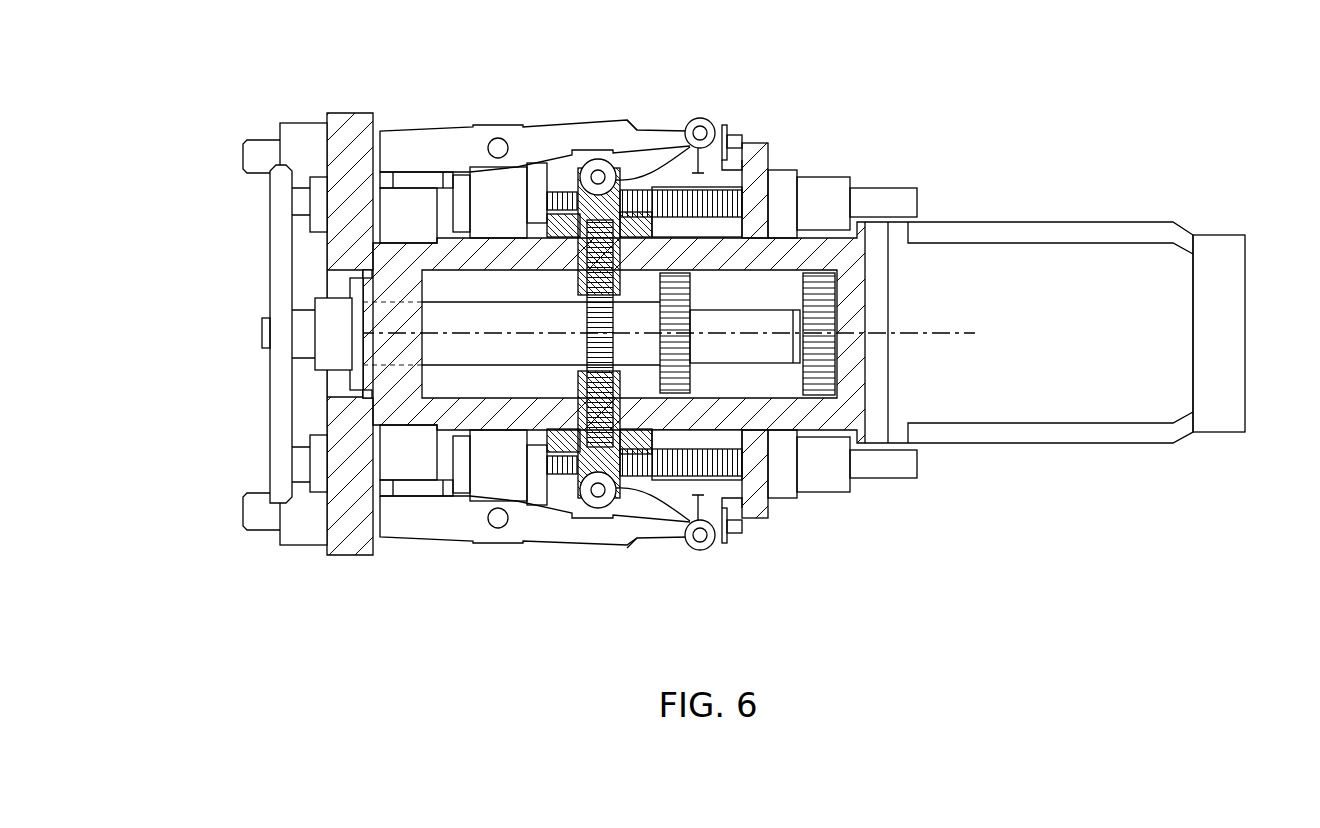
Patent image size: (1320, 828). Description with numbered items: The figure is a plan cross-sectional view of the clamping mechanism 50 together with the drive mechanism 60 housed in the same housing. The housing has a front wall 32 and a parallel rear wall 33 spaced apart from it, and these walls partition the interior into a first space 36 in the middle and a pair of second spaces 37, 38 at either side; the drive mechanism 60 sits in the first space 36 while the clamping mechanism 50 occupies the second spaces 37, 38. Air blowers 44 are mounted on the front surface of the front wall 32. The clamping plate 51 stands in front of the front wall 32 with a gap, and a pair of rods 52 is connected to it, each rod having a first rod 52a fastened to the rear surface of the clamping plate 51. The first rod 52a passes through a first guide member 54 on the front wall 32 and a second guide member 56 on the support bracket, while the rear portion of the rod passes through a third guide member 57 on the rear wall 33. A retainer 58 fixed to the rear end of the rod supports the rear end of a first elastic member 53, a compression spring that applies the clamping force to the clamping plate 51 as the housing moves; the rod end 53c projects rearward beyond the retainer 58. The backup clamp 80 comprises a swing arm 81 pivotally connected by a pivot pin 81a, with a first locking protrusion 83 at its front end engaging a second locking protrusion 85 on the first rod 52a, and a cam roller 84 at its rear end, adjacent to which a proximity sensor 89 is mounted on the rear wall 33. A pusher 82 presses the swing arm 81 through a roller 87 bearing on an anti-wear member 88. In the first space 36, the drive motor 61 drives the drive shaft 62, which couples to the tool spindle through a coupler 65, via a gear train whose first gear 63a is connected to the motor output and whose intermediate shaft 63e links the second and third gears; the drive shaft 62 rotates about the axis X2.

The front wall 32 is at (351, 553).
The rear wall 33 is at (754, 152).
The first space 36 is at (776, 386).
The second space 37 is at (708, 131).
The second space 38 is at (649, 493).
The air blower 44 is at (262, 145).
The clamping mechanism 50 is at (258, 243).
The clamping plate 51 is at (272, 378).
The rod 52 is at (306, 451).
The first rod 52a is at (412, 450).
The first elastic member 53 is at (672, 478).
The screw shaft end 53c is at (912, 203).
The first guide member 54 is at (316, 205).
The second guide member 56 is at (468, 176).
The third guide member 57 is at (797, 172).
The retainer 58 is at (845, 184).
The drive mechanism 60 is at (265, 334).
The drive motor 61 is at (1063, 252).
The drive shaft 62 is at (505, 307).
The first gear 63a is at (828, 286).
The intermediate shaft 63e is at (686, 282).
The coupler 65 is at (262, 330).
The backup clamp 80 is at (606, 110).
The swing arm 81 is at (450, 130).
The pivot pin 81a is at (498, 138).
The pusher 82 is at (640, 150).
The first locking protrusion 83 is at (378, 178).
The cam roller 84 is at (702, 118).
The second locking protrusion 85 is at (418, 185).
The roller 87 is at (586, 160).
The anti-wear member 88 is at (613, 137).
The proximity sensor 89 is at (735, 125).
The axis of the drive shaft X2 is at (468, 335).